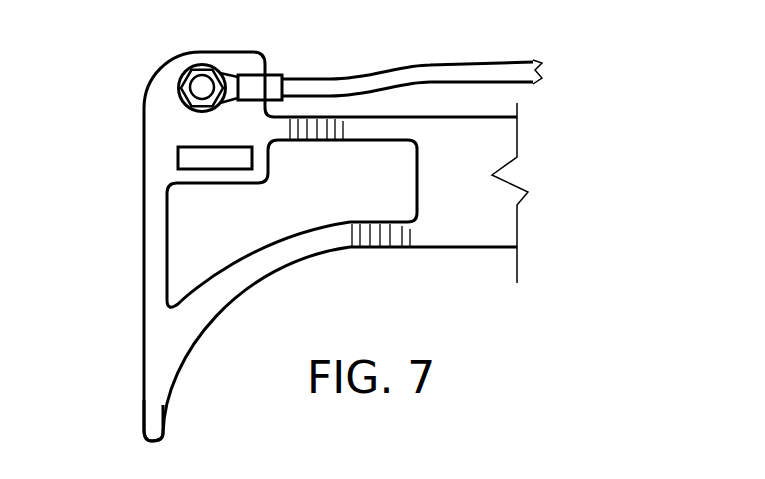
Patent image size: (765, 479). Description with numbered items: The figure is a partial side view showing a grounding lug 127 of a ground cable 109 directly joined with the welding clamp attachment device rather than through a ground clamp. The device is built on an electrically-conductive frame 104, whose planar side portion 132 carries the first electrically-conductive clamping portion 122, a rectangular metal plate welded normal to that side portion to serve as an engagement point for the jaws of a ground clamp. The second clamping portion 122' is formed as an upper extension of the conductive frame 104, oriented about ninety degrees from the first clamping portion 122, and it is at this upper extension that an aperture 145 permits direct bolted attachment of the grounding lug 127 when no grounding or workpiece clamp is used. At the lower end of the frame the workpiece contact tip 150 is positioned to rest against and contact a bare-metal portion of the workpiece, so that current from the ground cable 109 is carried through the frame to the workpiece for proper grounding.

The electrically-conductive frame 104 is at (552, 128).
The ground cable 109 is at (362, 79).
The first electrically-conductive clamping portion 122 is at (153, 167).
The second clamping portion 122' is at (358, 75).
The grounding lug 127 is at (192, 58).
The side portion 132 is at (487, 221).
The aperture 145 is at (180, 78).
The workpiece contact tip 150 is at (150, 428).